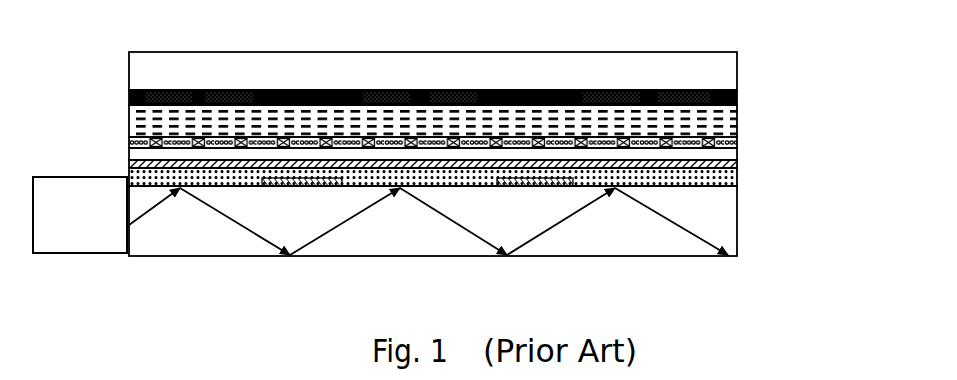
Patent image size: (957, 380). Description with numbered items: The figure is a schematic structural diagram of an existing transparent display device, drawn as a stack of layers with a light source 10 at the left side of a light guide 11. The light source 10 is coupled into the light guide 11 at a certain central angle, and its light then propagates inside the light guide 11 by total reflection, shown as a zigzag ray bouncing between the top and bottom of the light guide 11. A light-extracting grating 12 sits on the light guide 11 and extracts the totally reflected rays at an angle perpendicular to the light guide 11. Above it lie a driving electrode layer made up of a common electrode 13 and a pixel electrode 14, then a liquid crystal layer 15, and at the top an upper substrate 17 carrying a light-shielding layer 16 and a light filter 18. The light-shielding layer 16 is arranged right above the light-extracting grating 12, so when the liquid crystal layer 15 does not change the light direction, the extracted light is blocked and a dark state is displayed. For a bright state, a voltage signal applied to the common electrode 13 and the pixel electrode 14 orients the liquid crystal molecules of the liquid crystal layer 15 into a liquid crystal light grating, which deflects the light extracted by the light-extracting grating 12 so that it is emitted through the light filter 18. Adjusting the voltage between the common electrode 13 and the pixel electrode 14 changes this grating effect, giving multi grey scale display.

The light source 10 is at (94, 253).
The light guide 11 is at (737, 238).
The light-extracting grating 12 is at (573, 183).
The common electrode 13 is at (130, 163).
The pixel electrode 14 is at (737, 143).
The liquid crystal layer 15 is at (737, 118).
The light-shielding layer 16 is at (737, 95).
The upper substrate 17 is at (737, 62).
The light filter 18 is at (688, 95).